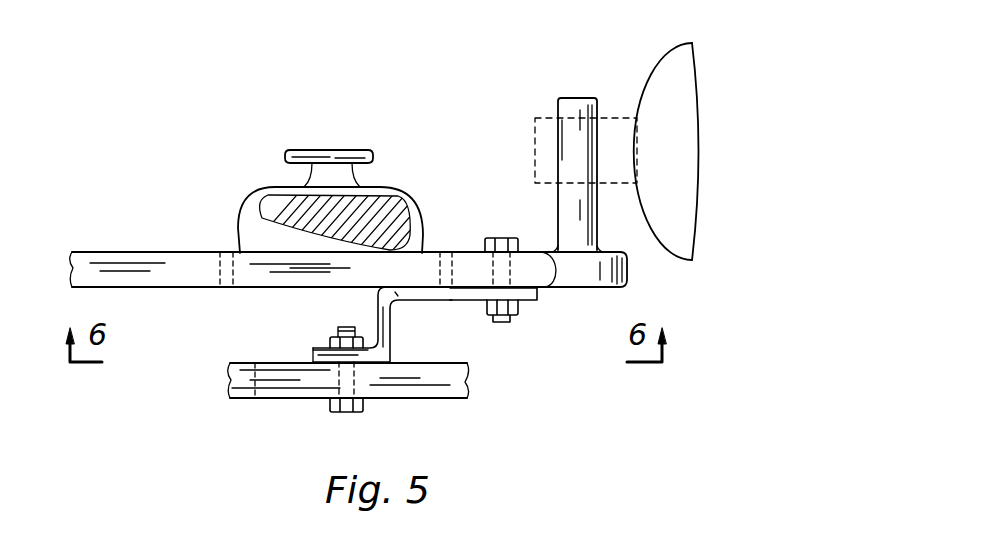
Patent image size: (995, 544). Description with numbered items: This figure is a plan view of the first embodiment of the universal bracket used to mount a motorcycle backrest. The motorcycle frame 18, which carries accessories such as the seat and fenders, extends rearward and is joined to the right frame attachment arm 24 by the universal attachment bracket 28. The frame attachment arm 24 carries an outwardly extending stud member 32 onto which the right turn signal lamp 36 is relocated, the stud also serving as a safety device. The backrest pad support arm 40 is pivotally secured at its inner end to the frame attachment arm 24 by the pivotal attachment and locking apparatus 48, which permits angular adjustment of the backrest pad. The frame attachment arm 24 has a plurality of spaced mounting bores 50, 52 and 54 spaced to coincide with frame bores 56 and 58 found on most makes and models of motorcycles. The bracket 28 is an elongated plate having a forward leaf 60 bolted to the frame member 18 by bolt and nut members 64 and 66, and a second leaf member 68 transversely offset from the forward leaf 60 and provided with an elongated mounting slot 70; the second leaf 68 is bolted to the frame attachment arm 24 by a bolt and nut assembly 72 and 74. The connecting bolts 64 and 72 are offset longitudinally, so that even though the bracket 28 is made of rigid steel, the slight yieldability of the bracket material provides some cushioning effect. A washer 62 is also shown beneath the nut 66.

The motorcycle frame 18 is at (457, 387).
The right frame attachment arm 24 is at (463, 255).
The universal attachment bracket 28 is at (393, 343).
The stud member 32 is at (558, 110).
The turn signal lamp 36 is at (652, 80).
The backrest pad support arm 40 is at (405, 200).
The pivotal attachment and locking apparatus 48 is at (357, 138).
The mounting bore 50 is at (224, 252).
The mounting bore 52 is at (436, 255).
The mounting bore 54 is at (497, 262).
The frame bore 56 is at (252, 368).
The frame bore 58 is at (342, 380).
The forward leaf 60 is at (321, 348).
The washer 62 is at (315, 355).
The bolt member 64 is at (357, 380).
The nut member 66 is at (336, 338).
The second leaf member 68 is at (538, 293).
The elongated mounting slot 70 is at (411, 293).
The bolt 72 is at (510, 272).
The nut 74 is at (513, 313).